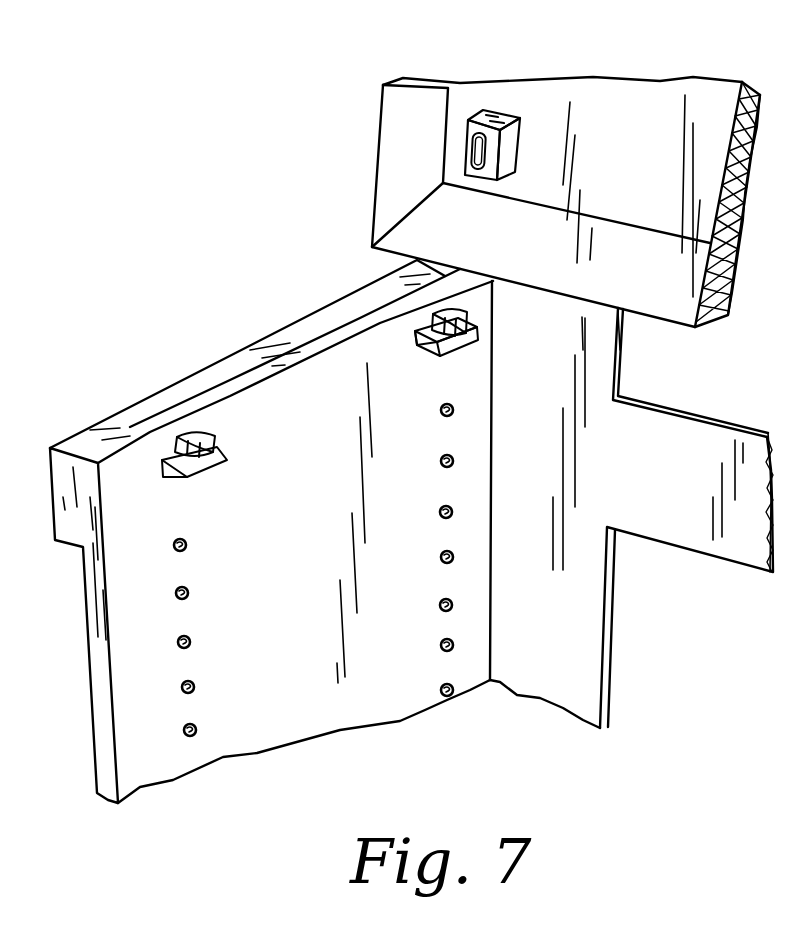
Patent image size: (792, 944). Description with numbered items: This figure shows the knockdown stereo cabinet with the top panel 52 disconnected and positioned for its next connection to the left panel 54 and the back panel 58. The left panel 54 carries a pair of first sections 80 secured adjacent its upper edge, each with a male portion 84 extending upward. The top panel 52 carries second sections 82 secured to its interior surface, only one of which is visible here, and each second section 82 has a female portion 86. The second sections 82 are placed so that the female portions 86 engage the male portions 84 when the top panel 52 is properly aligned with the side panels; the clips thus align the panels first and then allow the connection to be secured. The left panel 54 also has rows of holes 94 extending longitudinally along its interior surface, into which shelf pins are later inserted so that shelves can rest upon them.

The top panel 52 is at (636, 151).
The left panel 54 is at (314, 703).
The back panel 58 is at (654, 477).
The first section 80 is at (210, 465).
The second section 82 is at (515, 140).
The male portion 84 is at (210, 442).
The female portion 86 is at (470, 152).
The holes 94 is at (196, 728).